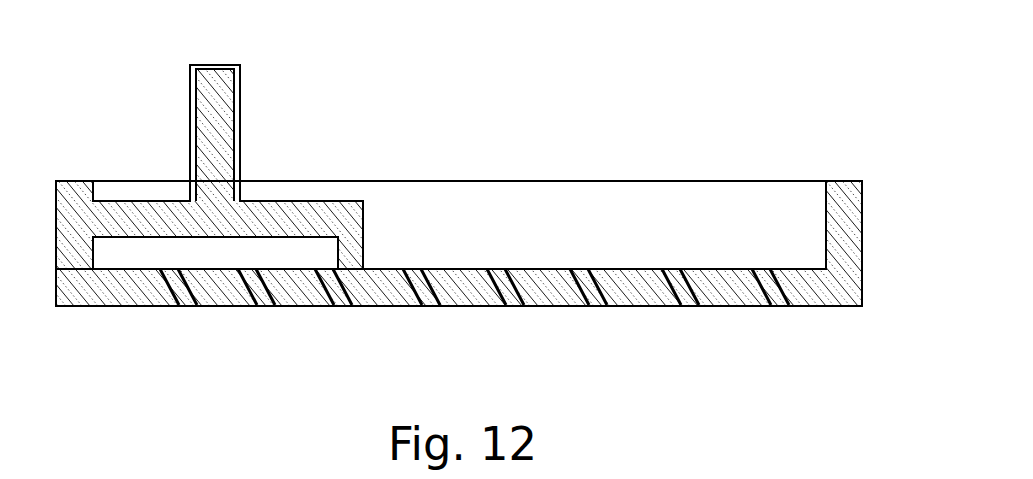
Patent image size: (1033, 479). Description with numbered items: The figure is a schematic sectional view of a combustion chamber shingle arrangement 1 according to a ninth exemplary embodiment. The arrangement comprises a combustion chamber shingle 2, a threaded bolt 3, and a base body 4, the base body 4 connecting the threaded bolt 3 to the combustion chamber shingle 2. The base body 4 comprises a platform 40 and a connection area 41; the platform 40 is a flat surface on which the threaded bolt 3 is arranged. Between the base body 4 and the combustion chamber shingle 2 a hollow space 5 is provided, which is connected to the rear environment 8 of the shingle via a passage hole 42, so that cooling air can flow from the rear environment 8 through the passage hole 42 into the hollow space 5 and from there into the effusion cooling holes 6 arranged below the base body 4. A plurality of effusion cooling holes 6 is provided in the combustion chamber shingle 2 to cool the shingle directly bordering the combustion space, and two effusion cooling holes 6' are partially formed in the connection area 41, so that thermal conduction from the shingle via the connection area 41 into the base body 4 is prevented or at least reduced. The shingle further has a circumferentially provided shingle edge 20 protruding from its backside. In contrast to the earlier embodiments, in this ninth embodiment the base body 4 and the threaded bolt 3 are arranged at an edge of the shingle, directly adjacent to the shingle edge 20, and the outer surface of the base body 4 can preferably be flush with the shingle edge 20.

The combustion chamber shingle arrangement 1 is at (592, 122).
The combustion chamber shingle 2 is at (384, 292).
The threaded bolt 3 is at (217, 103).
The base body 4 is at (116, 192).
The platform 40 is at (162, 222).
The connection area 41 is at (348, 240).
The passage hole 42 is at (96, 261).
The hollow space 5 is at (313, 256).
The effusion cooling holes 6 is at (491, 331).
The effusion cooling holes 6' is at (343, 331).
The rear environment 8 is at (601, 247).
The shingle edge 20 is at (842, 230).